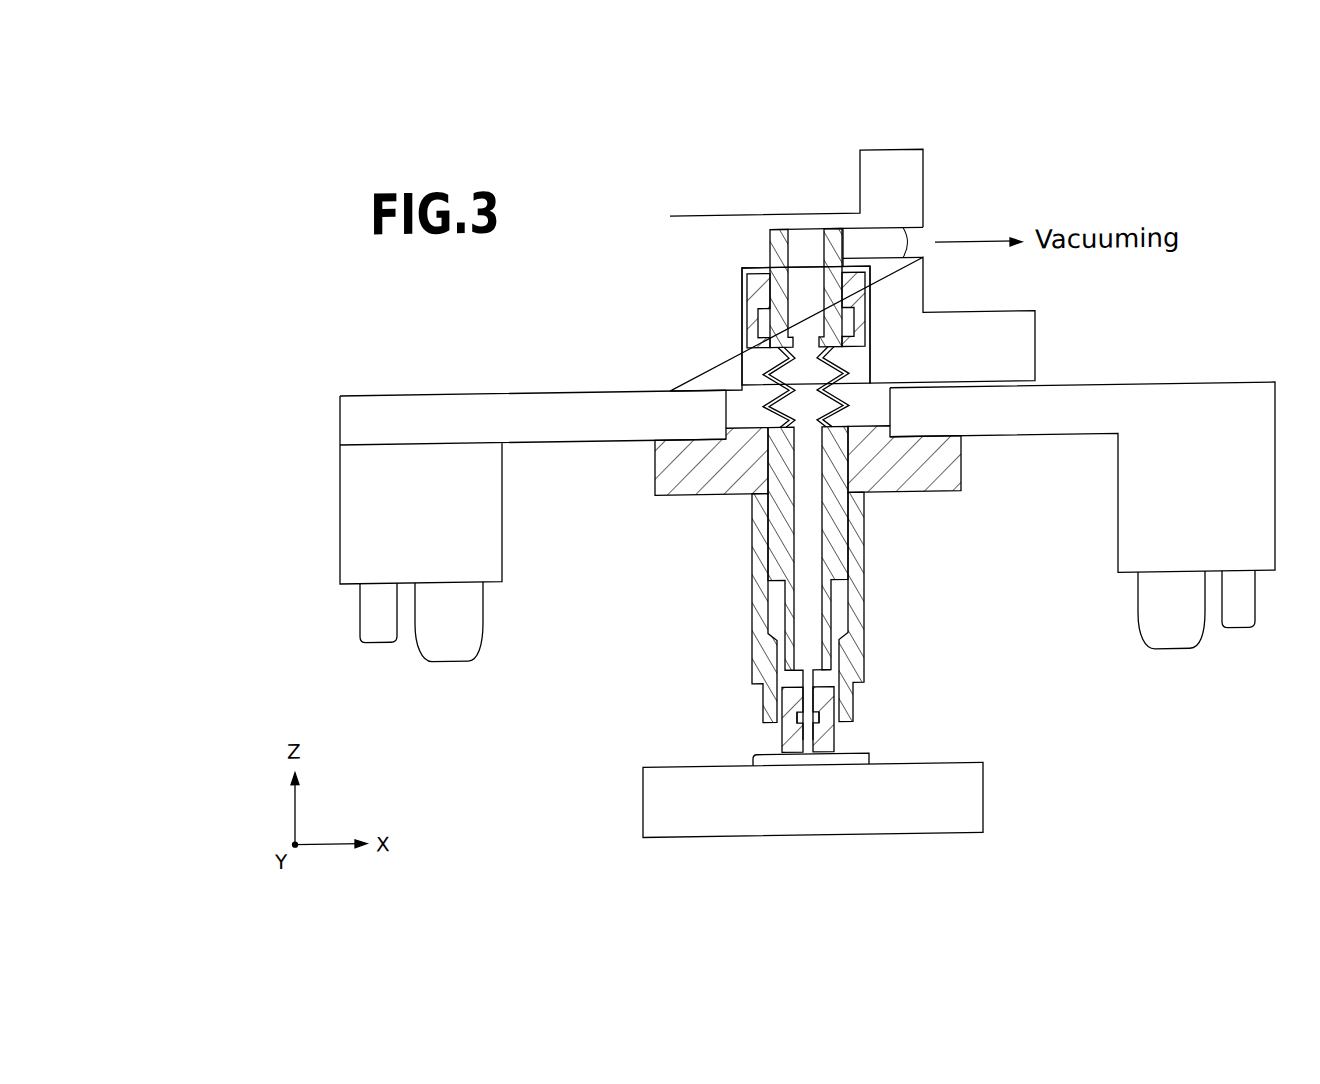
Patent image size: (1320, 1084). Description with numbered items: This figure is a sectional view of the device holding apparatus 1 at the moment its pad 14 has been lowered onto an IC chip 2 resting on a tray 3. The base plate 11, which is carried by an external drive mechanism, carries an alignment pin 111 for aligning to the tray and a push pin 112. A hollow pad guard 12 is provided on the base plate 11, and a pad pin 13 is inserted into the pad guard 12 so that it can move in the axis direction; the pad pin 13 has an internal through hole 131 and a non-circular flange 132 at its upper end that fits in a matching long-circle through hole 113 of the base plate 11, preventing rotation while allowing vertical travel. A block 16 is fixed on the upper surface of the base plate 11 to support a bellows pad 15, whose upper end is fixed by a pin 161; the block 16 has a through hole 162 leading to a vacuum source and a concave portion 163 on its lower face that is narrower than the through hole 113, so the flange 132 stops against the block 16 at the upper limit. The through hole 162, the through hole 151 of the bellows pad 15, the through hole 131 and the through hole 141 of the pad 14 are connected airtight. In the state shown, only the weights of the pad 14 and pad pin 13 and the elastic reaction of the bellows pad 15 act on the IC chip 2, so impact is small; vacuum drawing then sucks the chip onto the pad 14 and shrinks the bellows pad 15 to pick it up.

The device holding apparatus 1 is at (1123, 173).
The IC chip 2 is at (767, 757).
The tray 3 is at (975, 798).
The base plate 11 is at (1257, 387).
The alignment pin 111 is at (445, 648).
The push pin 112 is at (382, 622).
The through hole 113 is at (884, 405).
The pad guard 12 is at (857, 566).
The pad pin 13 is at (790, 622).
The through hole 131 is at (830, 612).
The flange 132 is at (873, 438).
The pad 14 is at (780, 732).
The through hole 141 is at (838, 734).
The bellows pad 15 is at (847, 354).
The through hole 151 is at (777, 392).
The block 16 is at (683, 273).
The pin 161 is at (772, 245).
The through hole 162 is at (910, 239).
The concave portion 163 is at (862, 371).